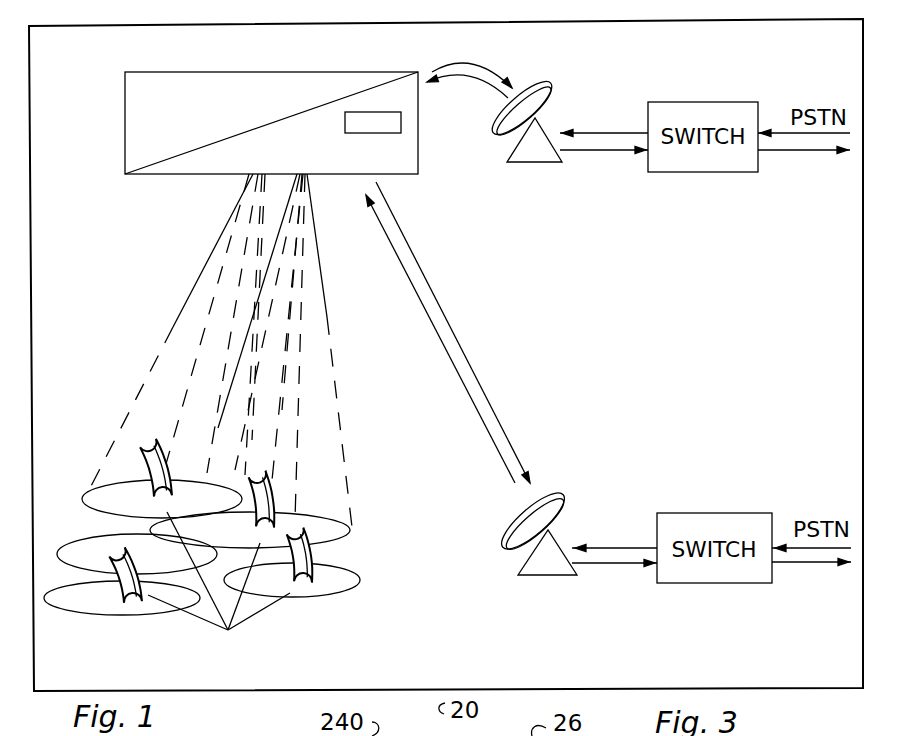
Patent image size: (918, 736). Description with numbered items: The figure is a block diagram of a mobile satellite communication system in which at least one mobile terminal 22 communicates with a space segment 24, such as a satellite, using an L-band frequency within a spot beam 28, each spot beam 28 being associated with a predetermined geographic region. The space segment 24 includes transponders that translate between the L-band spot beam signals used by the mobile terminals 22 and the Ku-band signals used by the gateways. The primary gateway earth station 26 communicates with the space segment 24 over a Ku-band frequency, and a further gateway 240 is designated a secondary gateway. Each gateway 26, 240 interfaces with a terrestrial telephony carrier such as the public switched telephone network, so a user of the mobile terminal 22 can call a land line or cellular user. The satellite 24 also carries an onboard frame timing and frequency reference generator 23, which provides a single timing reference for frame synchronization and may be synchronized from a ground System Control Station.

The mobile terminal 22 is at (122, 606).
The onboard frequency reference generator 23 is at (401, 122).
The space segment 24 is at (410, 72).
The secondary gateway 240 is at (492, 133).
The gateway earth station 26 is at (505, 545).
The spot beam 28 is at (333, 363).